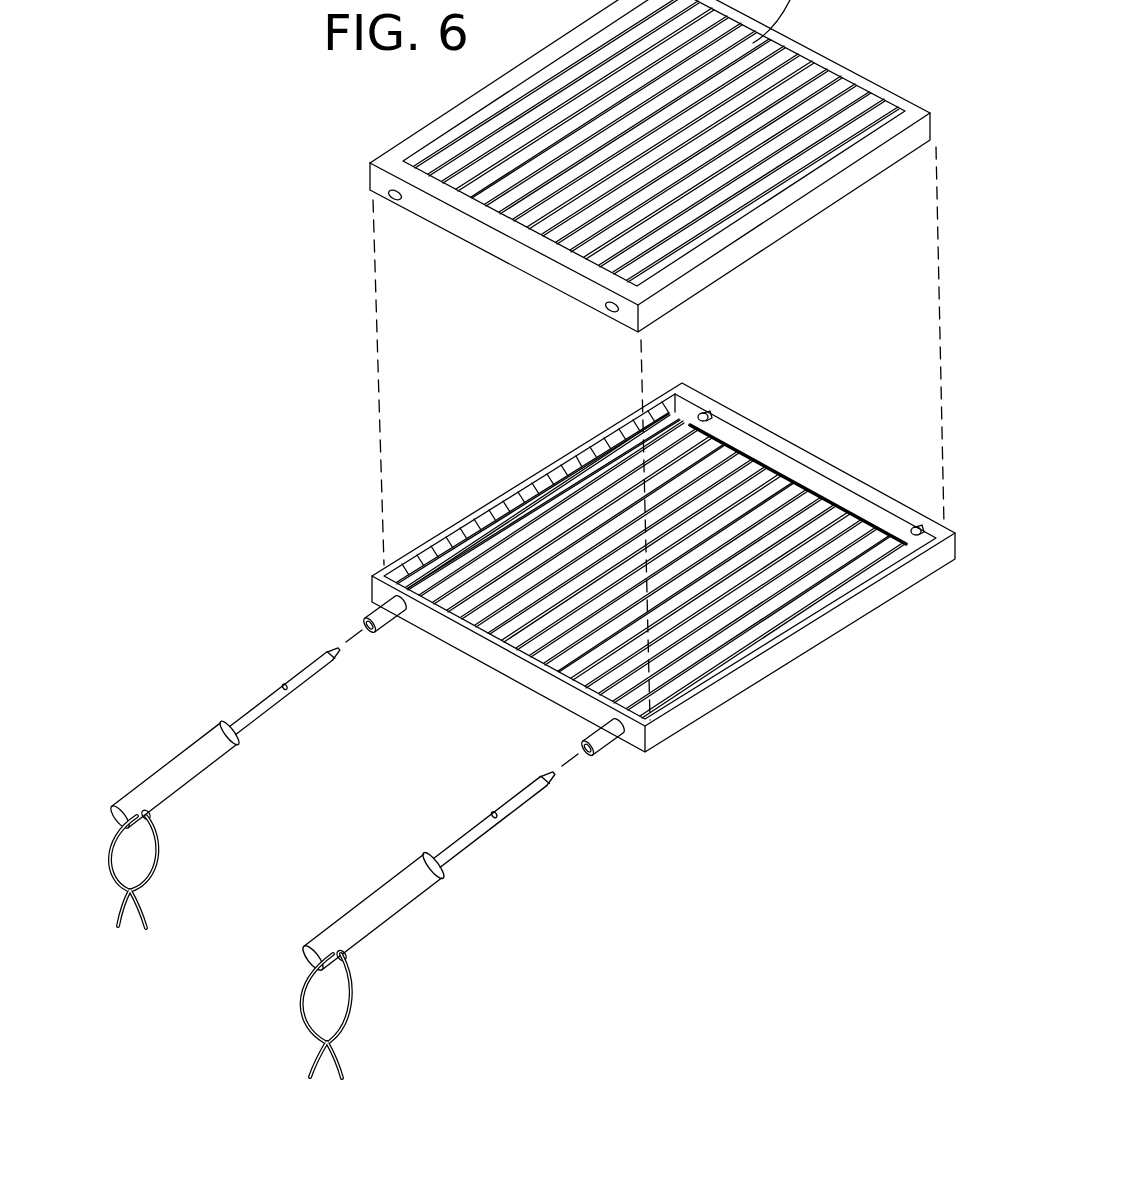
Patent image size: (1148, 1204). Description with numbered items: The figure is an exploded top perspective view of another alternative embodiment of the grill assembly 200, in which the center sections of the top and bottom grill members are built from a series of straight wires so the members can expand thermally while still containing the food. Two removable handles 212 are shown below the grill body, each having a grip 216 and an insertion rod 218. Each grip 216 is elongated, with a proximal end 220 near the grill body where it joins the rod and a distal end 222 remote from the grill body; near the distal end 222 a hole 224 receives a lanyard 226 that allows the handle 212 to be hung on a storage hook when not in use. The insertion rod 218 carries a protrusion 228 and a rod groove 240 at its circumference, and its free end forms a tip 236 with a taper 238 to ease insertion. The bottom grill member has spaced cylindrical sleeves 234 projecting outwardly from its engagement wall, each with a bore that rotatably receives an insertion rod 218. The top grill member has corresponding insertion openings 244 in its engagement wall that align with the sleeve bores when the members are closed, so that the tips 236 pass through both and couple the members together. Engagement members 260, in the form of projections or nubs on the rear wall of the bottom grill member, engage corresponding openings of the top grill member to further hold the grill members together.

The grill assembly 200 is at (265, 243).
The handle 212 is at (321, 836).
The grip 216 is at (167, 763).
The insertion rod 218 is at (257, 704).
The proximal end 220 is at (227, 723).
The distal end 222 is at (103, 803).
The hole 224 is at (145, 811).
The lanyard 226 is at (103, 860).
The protrusion 228 is at (288, 693).
The cylindrical sleeve 234 is at (373, 611).
The tip 236 is at (341, 647).
The taper 238 is at (340, 662).
The rod groove 240 is at (307, 667).
The insertion opening 244 is at (398, 201).
The engagement member 260 is at (706, 412).